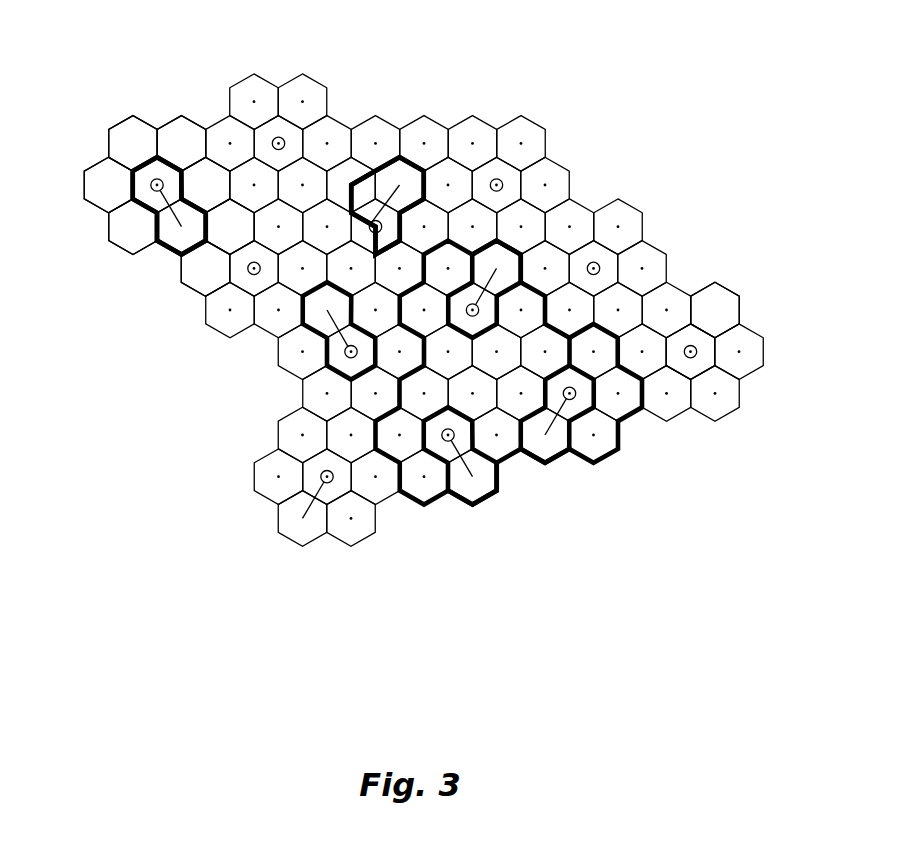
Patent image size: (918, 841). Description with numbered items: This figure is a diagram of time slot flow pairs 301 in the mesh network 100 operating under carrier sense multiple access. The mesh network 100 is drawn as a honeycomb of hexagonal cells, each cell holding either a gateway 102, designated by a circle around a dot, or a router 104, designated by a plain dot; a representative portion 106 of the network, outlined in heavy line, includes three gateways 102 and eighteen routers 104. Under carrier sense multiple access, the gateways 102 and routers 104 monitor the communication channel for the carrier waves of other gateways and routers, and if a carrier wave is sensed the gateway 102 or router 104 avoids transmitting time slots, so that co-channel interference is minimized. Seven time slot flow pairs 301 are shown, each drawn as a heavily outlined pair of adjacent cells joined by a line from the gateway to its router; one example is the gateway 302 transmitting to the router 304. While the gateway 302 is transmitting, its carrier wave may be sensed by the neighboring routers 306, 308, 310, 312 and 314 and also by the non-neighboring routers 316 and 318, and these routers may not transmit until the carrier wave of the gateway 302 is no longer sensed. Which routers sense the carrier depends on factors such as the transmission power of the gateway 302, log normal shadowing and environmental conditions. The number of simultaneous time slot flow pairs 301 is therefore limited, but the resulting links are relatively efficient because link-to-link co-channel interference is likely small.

The mesh network 100 is at (594, 130).
The gateway 102 is at (697, 352).
The router 104 is at (717, 311).
The representative portion 106 is at (617, 455).
The TS flow pair 301 is at (399, 183).
The gateway 302 is at (133, 170).
The router 304 is at (175, 256).
The router 306 is at (131, 236).
The router 308 is at (108, 187).
The router 310 is at (132, 143).
The router 312 is at (183, 143).
The router 314 is at (205, 185).
The router 316 is at (231, 229).
The router 318 is at (205, 270).